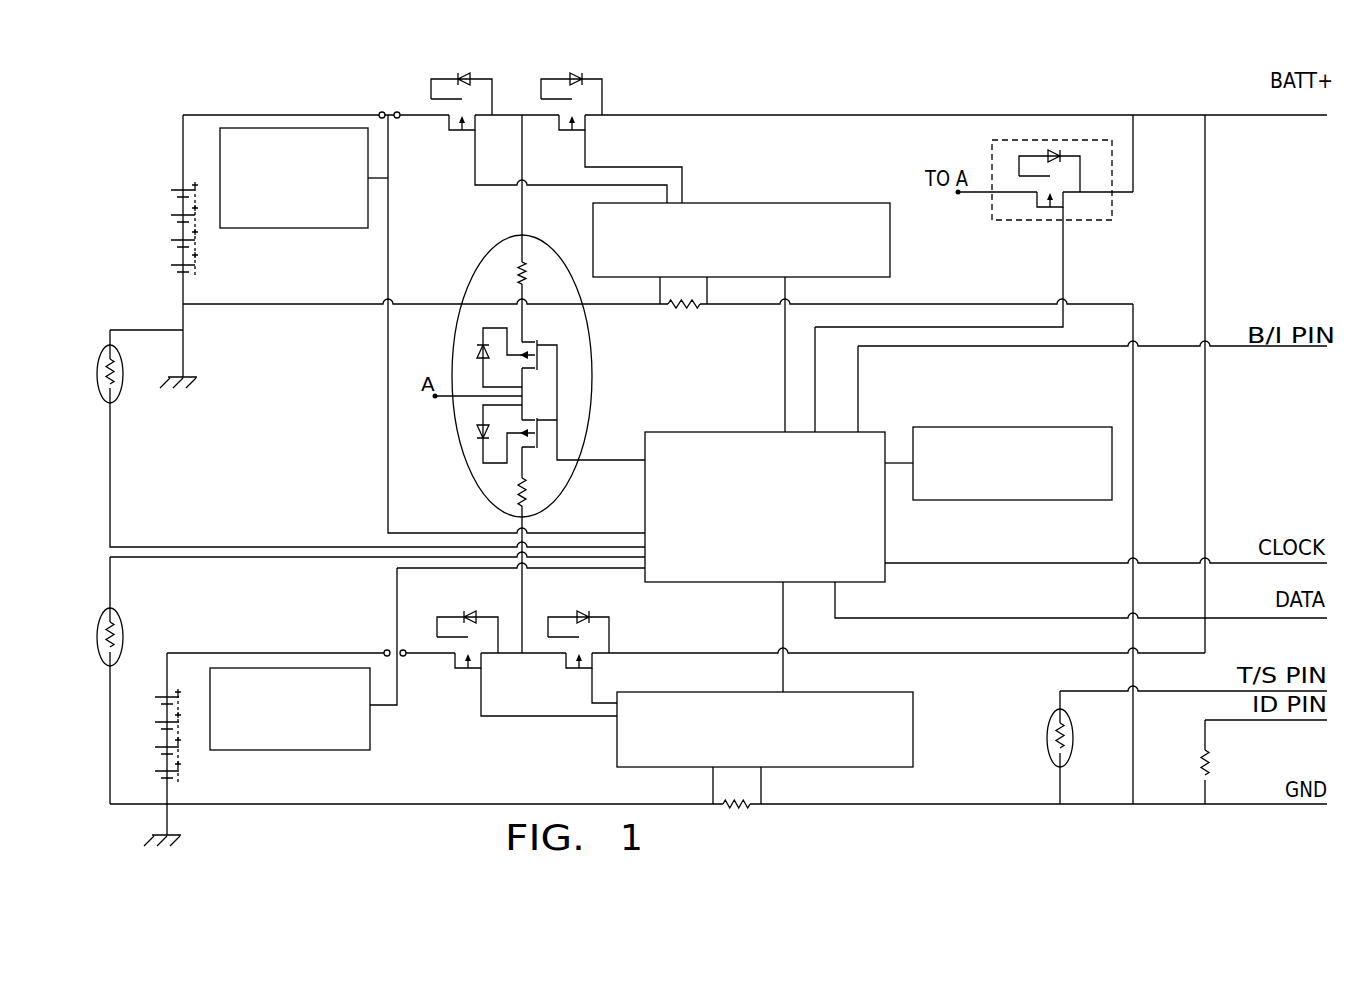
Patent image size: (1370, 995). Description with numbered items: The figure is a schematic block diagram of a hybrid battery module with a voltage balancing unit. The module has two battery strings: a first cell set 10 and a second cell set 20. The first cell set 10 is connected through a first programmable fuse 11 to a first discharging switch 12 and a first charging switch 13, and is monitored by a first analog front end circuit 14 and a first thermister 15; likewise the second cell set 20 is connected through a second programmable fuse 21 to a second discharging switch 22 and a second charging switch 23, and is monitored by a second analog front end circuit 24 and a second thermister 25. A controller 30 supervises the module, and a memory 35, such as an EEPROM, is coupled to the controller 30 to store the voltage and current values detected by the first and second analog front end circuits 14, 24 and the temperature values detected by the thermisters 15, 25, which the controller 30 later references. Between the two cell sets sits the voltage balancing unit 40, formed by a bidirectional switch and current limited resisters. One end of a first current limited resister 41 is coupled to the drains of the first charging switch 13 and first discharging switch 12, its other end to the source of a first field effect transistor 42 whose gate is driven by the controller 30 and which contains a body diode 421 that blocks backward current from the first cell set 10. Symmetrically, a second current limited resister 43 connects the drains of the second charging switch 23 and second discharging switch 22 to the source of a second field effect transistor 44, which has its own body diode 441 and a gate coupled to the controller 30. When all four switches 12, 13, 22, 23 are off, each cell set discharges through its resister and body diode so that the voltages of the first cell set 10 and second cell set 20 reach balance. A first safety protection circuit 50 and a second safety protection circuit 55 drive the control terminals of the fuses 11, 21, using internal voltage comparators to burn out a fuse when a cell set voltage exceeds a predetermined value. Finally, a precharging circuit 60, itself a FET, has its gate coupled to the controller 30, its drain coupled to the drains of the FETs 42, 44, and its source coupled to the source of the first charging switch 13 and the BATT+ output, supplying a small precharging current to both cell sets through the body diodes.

The first cell set 10 is at (170, 204).
The first programmable fuse 11 is at (388, 112).
The first discharging switch 12 is at (452, 93).
The first charging switch 13 is at (563, 98).
The first analog front end circuit 14 is at (890, 250).
The first thermister 15 is at (97, 365).
The second cell set 20 is at (148, 718).
The second programmable fuse 21 is at (390, 648).
The second discharging switch 22 is at (458, 628).
The second charging switch 23 is at (597, 628).
The second analog front end circuit 24 is at (877, 697).
The second thermister 25 is at (105, 617).
The controller 30 is at (727, 443).
The memory 35 is at (1073, 440).
The voltage balancing unit 40 is at (502, 240).
The first current limited resister 41 is at (516, 272).
The first field effect transistor 42 is at (540, 342).
The body diode 421 is at (480, 352).
The second current limited resister 43 is at (515, 488).
The second field effect transistor 44 is at (540, 415).
The body diode 441 is at (478, 430).
The first safety protection circuit 50 is at (305, 140).
The second safety protection circuit 55 is at (258, 672).
The precharging circuit 60 is at (1088, 140).